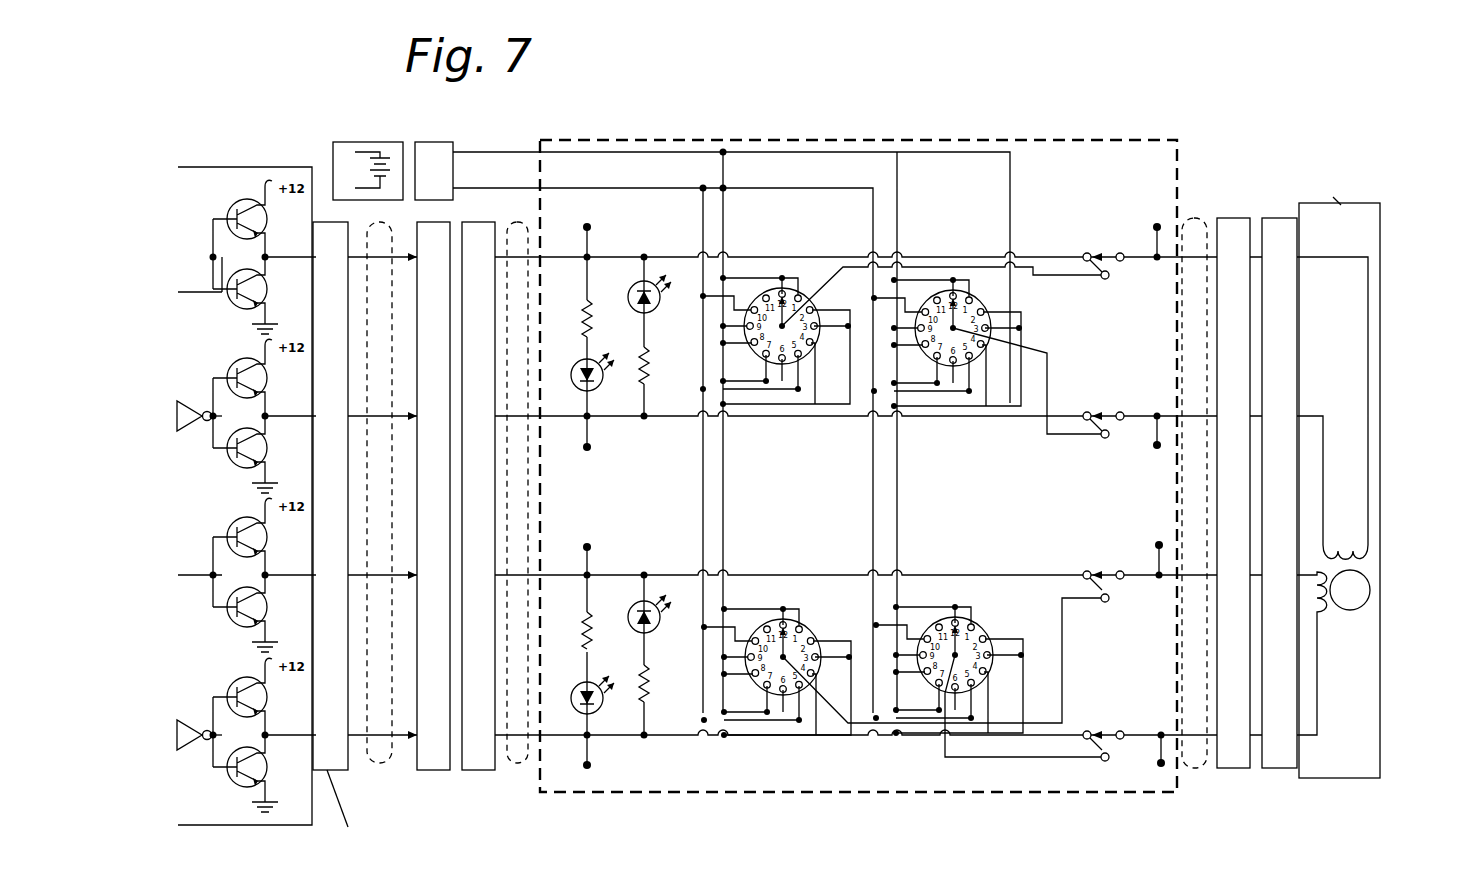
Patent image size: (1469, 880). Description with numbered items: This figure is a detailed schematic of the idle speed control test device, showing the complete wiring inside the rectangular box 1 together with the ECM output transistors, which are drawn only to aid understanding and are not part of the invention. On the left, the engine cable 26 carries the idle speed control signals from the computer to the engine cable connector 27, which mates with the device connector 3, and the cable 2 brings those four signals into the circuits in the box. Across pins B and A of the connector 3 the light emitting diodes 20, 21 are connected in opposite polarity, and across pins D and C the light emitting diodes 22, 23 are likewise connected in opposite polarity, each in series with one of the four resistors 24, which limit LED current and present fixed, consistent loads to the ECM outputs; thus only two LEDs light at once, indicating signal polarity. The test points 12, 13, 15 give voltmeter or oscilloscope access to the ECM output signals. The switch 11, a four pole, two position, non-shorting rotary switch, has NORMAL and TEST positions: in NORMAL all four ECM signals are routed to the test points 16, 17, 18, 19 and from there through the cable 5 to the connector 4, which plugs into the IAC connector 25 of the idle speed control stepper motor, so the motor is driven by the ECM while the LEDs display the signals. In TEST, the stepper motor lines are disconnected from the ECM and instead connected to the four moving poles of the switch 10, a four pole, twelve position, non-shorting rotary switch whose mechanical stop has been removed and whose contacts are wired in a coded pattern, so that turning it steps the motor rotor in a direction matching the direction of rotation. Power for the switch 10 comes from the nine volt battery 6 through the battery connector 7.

The rectangular box 1 is at (922, 795).
The cable 2 is at (519, 765).
The connector 3 is at (478, 772).
The connector 4 is at (1240, 770).
The cable 5 is at (1197, 770).
The nine volt battery 6 is at (333, 152).
The battery connector 7 is at (453, 148).
The switch 10 is at (1000, 695).
The switch 11 is at (1076, 746).
The test point 12 is at (584, 436).
The test point 13 is at (605, 258).
The test point 15 is at (586, 565).
The test point 16 is at (1157, 446).
The test point 17 is at (1157, 231).
The test point 18 is at (1163, 764).
The test point 19 is at (1160, 550).
The light emitting diode 20 is at (600, 371).
The light emitting diode 21 is at (640, 285).
The light emitting diode 22 is at (640, 604).
The light emitting diode 23 is at (598, 722).
The resistor 24 is at (630, 517).
The IAC connector 25 is at (1282, 770).
The engine cable 26 is at (383, 765).
The engine cable connector 27 is at (437, 772).